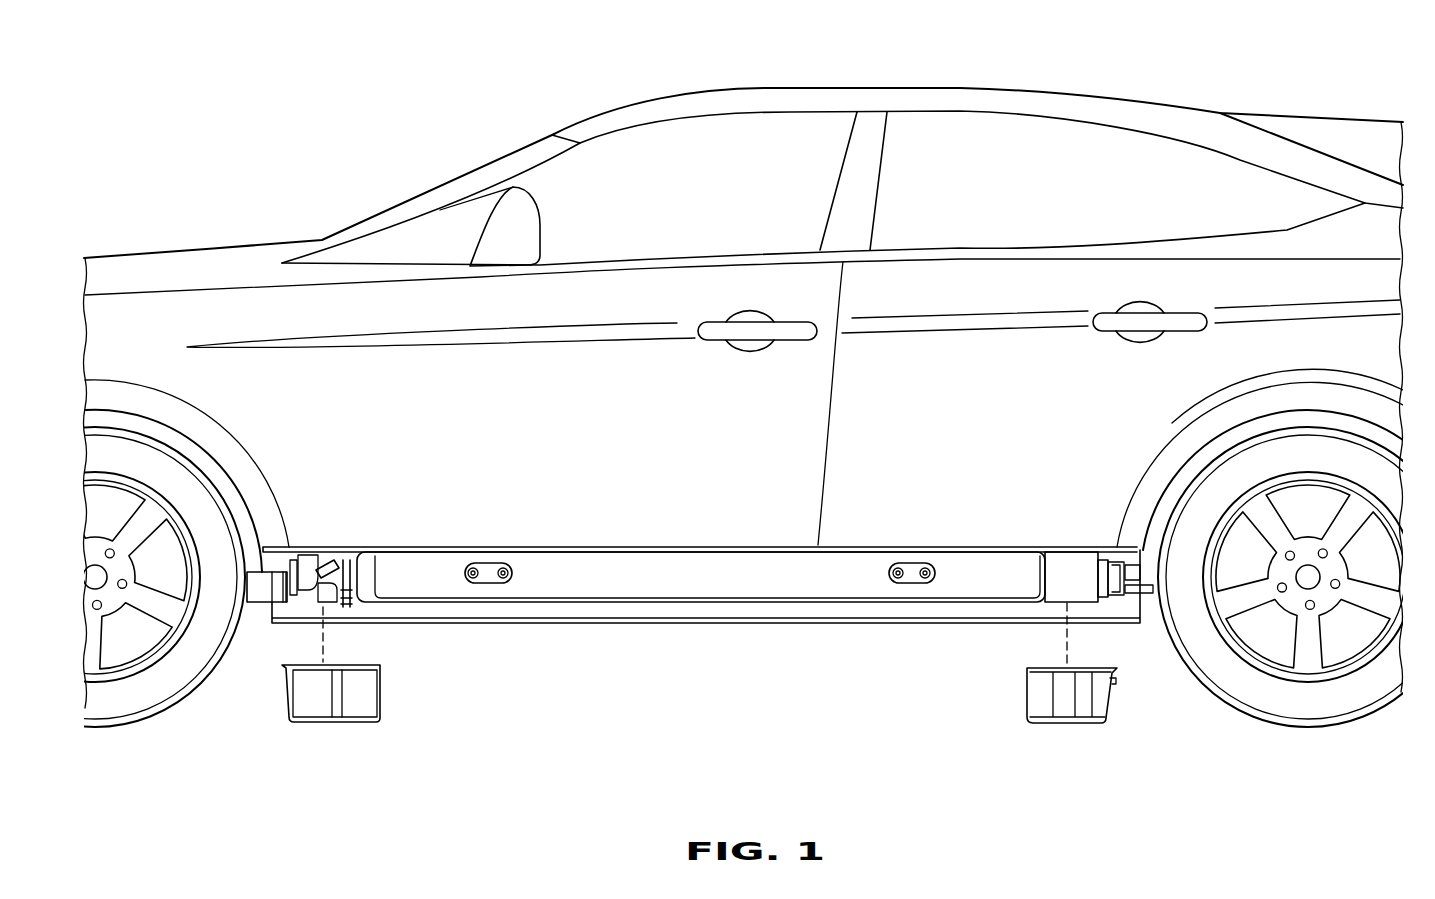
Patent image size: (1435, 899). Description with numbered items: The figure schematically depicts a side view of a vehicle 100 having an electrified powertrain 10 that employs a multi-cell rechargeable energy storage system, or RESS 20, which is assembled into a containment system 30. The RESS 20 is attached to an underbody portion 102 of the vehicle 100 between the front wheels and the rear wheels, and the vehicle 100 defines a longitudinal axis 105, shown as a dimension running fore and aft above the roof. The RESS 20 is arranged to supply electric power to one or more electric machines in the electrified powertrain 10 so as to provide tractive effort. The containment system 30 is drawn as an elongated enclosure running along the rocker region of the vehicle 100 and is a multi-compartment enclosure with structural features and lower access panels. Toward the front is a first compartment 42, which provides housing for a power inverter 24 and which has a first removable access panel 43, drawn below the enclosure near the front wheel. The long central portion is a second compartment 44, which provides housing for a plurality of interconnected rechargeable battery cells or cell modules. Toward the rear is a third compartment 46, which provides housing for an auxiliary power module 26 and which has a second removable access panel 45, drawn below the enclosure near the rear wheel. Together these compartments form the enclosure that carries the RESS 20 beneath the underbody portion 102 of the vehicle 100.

The vehicle 100 is at (332, 203).
The longitudinal axis 105 is at (1088, 35).
The electrified powertrain 10 is at (218, 483).
The rechargeable energy storage system 20 is at (701, 629).
The containment system 30 is at (573, 625).
The power inverter 24 is at (569, 602).
The first compartment 42 is at (277, 622).
The second compartment 44 is at (858, 568).
The auxiliary power module 26 is at (1117, 648).
The third compartment 46 is at (1107, 597).
The first removable access panel 43 is at (318, 723).
The second removable access panel 45 is at (1060, 725).
The underbody portion 102 is at (728, 648).